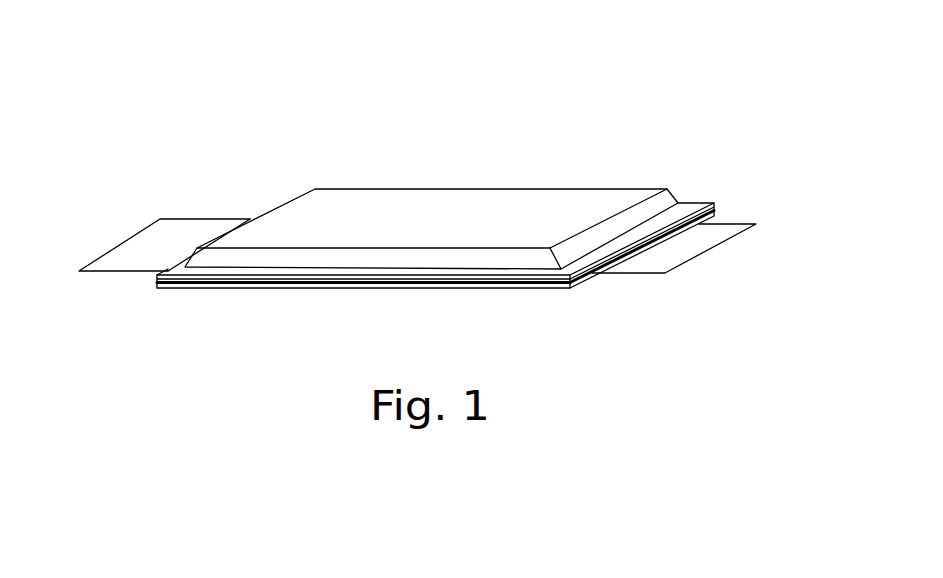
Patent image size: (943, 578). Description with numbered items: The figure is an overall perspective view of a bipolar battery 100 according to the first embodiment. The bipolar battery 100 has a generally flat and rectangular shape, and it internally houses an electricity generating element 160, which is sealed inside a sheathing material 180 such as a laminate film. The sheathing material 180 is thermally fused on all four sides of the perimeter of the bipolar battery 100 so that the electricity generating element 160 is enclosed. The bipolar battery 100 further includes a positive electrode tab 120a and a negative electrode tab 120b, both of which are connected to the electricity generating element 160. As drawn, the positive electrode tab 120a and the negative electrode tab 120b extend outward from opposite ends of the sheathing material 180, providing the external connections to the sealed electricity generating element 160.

The bipolar battery 100 is at (309, 69).
The positive electrode tab 120a is at (165, 247).
The negative electrode tab 120b is at (682, 250).
The electricity generating element 160 is at (498, 210).
The sheathing material 180 is at (702, 198).